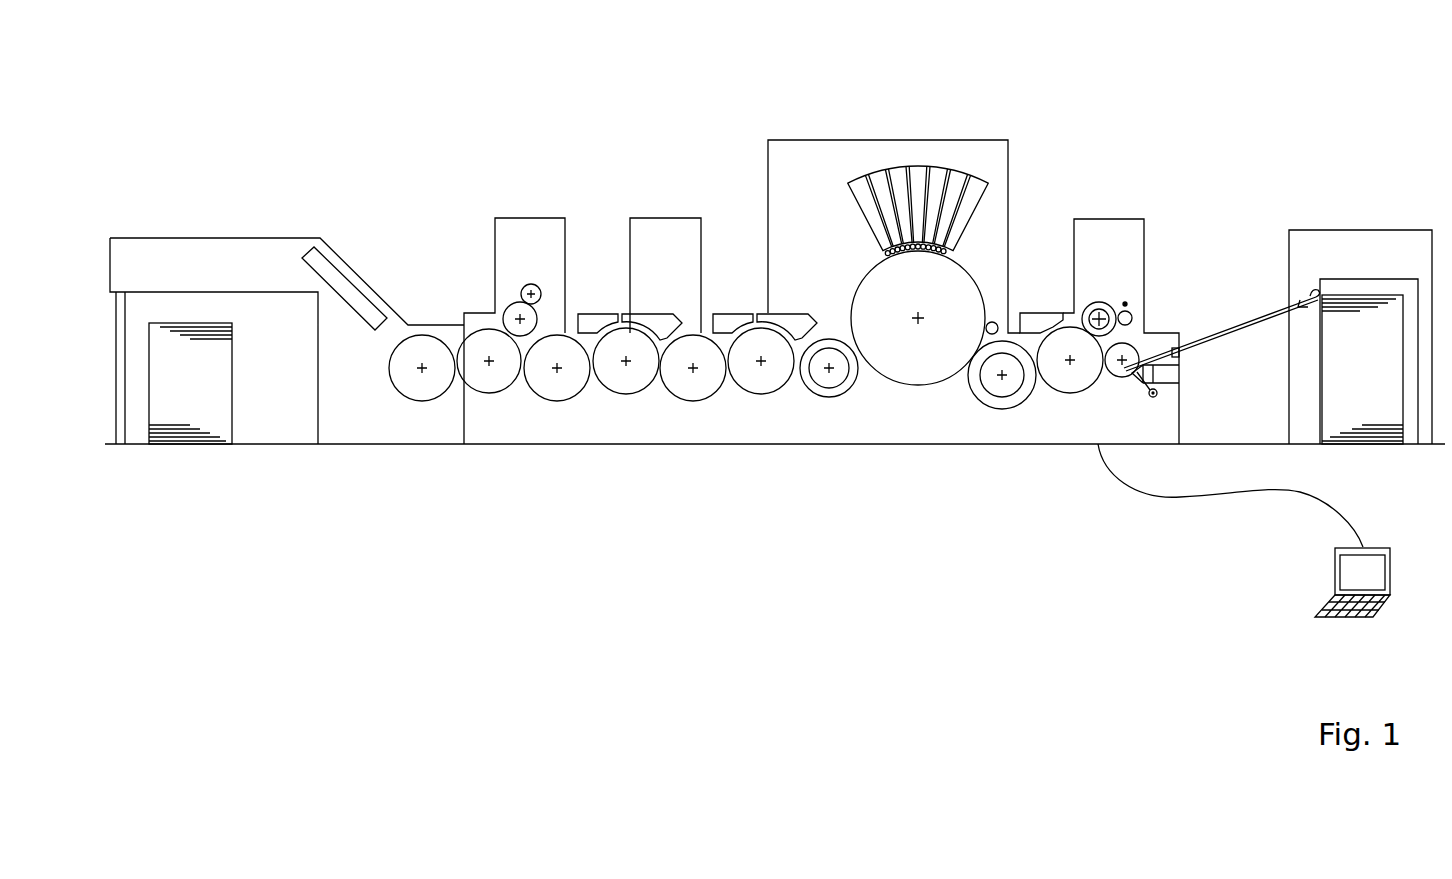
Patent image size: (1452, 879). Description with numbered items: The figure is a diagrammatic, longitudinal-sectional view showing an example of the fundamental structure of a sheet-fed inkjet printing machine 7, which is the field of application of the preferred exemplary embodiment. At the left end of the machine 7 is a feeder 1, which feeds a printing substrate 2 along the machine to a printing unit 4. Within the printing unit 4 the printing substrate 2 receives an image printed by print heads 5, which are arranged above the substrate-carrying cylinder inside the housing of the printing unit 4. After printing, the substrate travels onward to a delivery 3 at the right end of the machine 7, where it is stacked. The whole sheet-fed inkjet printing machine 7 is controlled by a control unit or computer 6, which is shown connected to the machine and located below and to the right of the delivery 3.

The feeder 1 is at (223, 265).
The printing substrate 2 is at (973, 273).
The delivery 3 is at (1371, 293).
The printing unit 4 is at (828, 138).
The print heads 5 is at (918, 163).
The control unit or computer 6 is at (1333, 572).
The inkjet printing machine 7 is at (1222, 63).